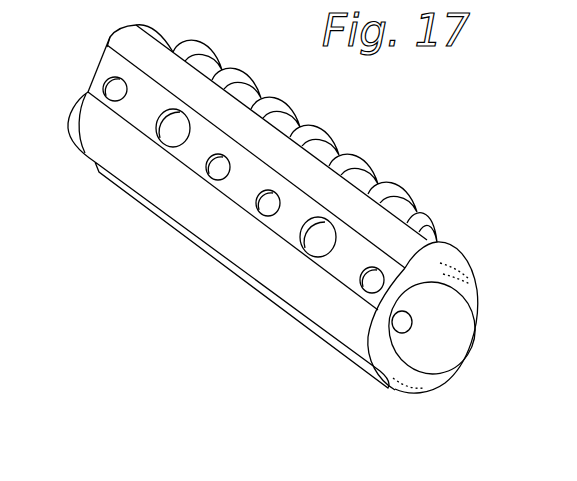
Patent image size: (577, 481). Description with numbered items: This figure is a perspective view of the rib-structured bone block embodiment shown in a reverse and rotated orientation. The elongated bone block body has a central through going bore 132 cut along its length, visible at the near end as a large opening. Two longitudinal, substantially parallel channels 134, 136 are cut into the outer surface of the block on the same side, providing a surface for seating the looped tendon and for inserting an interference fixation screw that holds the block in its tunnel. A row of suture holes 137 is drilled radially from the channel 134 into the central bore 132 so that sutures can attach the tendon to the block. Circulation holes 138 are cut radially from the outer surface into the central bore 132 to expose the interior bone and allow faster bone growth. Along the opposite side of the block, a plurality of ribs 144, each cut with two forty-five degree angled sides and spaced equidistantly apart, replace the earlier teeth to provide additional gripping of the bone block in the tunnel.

The central through going bore 132 is at (450, 321).
The channel 134 is at (332, 260).
The channel 136 is at (373, 377).
The suture holes 137 is at (337, 212).
The circulation holes 138 is at (207, 168).
The ribs 144 is at (446, 226).